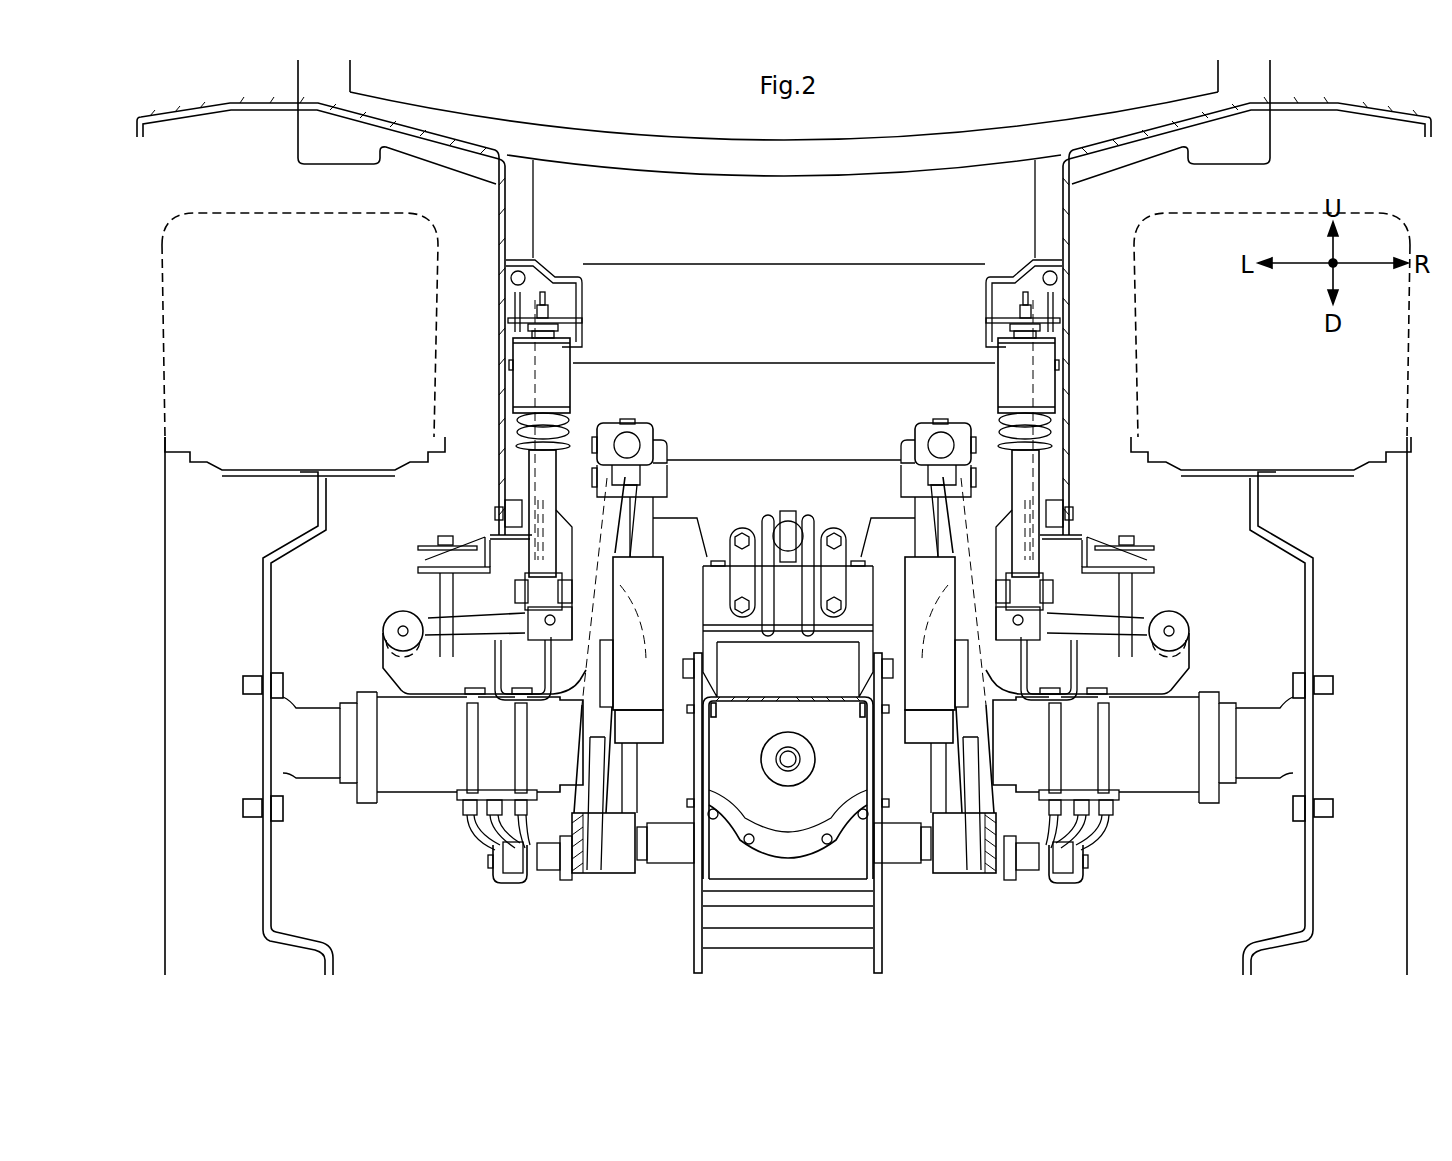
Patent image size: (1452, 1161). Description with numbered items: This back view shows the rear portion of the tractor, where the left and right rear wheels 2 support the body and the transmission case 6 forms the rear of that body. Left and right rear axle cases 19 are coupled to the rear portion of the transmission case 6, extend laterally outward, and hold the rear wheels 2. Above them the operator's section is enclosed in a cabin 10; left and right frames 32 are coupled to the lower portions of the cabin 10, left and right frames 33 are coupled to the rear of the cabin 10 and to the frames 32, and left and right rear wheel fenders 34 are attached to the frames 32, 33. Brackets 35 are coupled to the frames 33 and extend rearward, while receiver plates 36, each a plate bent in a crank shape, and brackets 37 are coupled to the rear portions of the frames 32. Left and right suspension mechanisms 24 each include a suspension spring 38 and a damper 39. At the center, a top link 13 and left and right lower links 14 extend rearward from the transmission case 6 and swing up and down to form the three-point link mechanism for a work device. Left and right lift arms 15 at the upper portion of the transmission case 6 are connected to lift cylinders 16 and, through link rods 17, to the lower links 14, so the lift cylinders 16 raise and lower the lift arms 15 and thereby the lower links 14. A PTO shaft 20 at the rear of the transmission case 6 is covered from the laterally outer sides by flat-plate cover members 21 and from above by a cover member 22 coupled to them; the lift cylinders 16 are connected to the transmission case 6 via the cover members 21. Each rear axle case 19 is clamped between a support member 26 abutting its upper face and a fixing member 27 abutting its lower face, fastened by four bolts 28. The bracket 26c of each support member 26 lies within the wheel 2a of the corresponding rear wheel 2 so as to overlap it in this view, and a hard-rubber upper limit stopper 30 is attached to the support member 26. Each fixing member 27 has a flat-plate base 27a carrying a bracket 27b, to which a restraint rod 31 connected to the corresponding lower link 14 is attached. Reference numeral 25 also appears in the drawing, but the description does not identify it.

The rear wheel 2 is at (160, 392).
The wheel 2a is at (262, 578).
The transmission case 6 is at (850, 868).
The cabin 10 is at (290, 82).
The top link 13 is at (784, 510).
The lower link 14 is at (580, 876).
The lift arm 15 is at (662, 430).
The lift cylinder 16 is at (660, 573).
The link rod 17 is at (784, 734).
The rear axle case 19 is at (375, 775).
The PTO shaft 20 is at (785, 762).
The cover member 21 is at (690, 908).
The cover member 22 is at (777, 696).
The suspension mechanism 24 is at (580, 355).
The lower arm 25 is at (432, 645).
The support member 26 is at (380, 626).
The bracket 26c is at (393, 658).
The fixing member 27 is at (483, 839).
The base 27a is at (460, 803).
The bracket 27b is at (485, 843).
The bolt 28 is at (515, 768).
The upper limit stopper 30 is at (418, 548).
The restraint rod 31 is at (507, 875).
The frame 32 is at (517, 515).
The frame 33 is at (527, 213).
The rear wheel fender 34 is at (230, 108).
The bracket 35 is at (584, 300).
The receiver plate 36 is at (475, 537).
The bracket 37 is at (505, 572).
The suspension spring 38 is at (567, 428).
The damper 39 is at (540, 478).